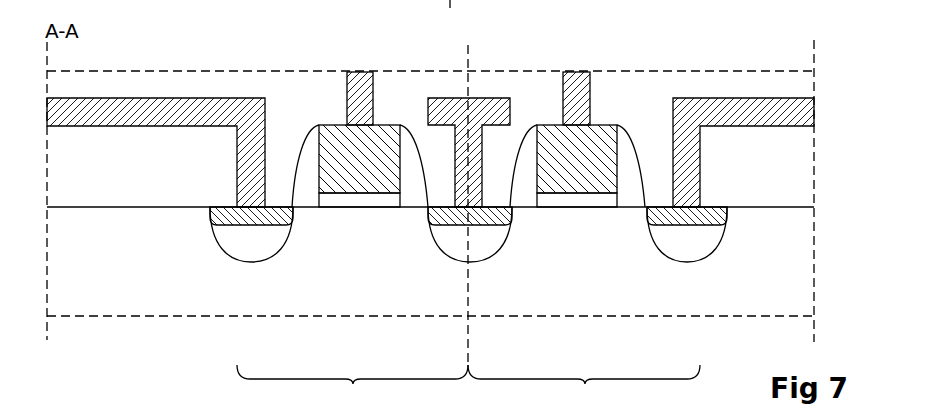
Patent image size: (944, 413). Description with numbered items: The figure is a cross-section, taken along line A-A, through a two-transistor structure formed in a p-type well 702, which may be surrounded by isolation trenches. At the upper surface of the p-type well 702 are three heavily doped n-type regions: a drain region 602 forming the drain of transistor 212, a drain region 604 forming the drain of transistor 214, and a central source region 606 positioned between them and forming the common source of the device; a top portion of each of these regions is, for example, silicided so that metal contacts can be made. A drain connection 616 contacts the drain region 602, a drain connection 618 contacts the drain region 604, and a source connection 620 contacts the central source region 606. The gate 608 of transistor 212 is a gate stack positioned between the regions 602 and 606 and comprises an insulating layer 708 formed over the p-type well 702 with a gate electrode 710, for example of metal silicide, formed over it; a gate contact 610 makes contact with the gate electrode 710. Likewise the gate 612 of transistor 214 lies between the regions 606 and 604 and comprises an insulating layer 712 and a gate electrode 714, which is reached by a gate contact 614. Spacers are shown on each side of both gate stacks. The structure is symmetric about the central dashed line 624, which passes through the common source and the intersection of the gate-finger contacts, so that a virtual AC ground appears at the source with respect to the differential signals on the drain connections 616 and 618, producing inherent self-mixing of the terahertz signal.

The drain region 602 is at (228, 233).
The drain region 604 is at (657, 247).
The central source region 606 is at (484, 249).
The gate 608 is at (333, 113).
The gate contact 610 is at (357, 85).
The gate 612 is at (606, 118).
The gate contact 614 is at (575, 78).
The drain connection 616 is at (95, 112).
The drain connection 618 is at (717, 108).
The source connection 620 is at (487, 100).
The dashed line 624 is at (470, 44).
The p-type well 702 is at (793, 252).
The insulating layer 708 is at (357, 205).
The gate electrode 710 is at (385, 130).
The insulating layer 712 is at (578, 205).
The gate electrode 714 is at (548, 130).
The transistor 212 is at (352, 387).
The transistor 214 is at (584, 387).